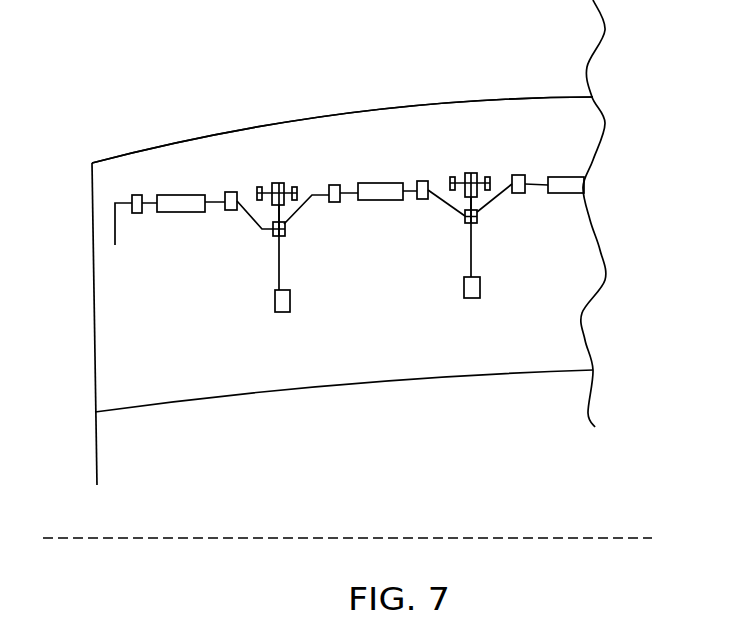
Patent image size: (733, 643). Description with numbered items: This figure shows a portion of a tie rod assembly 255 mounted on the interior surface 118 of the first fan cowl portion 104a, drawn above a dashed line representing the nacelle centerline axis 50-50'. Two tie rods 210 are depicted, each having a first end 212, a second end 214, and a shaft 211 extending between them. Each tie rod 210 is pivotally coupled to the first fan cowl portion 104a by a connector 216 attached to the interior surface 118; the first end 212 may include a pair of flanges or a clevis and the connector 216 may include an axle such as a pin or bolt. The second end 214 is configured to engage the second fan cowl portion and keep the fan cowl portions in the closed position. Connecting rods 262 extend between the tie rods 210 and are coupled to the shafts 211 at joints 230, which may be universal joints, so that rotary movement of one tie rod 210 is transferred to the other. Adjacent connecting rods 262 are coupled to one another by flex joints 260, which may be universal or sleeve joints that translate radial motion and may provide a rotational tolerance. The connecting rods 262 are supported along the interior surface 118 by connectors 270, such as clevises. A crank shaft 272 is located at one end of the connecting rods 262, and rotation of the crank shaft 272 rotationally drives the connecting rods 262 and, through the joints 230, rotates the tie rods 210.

The first fan cowl portion 104a is at (376, 112).
The tie rod assembly 255 is at (128, 160).
The crank shaft 272 is at (115, 232).
The connector 270 is at (133, 198).
The flex joint 260 is at (190, 200).
The connecting rod 262 is at (148, 204).
The connector 216 is at (262, 190).
The first end 212 is at (278, 183).
The joint 230 is at (285, 231).
The shaft 211 is at (280, 272).
The second end 214 is at (287, 302).
The tie rod 210 is at (270, 272).
The interior surface 118 is at (370, 320).
The centerline axis 50 is at (354, 505).
The centerline axis 50' is at (50, 508).